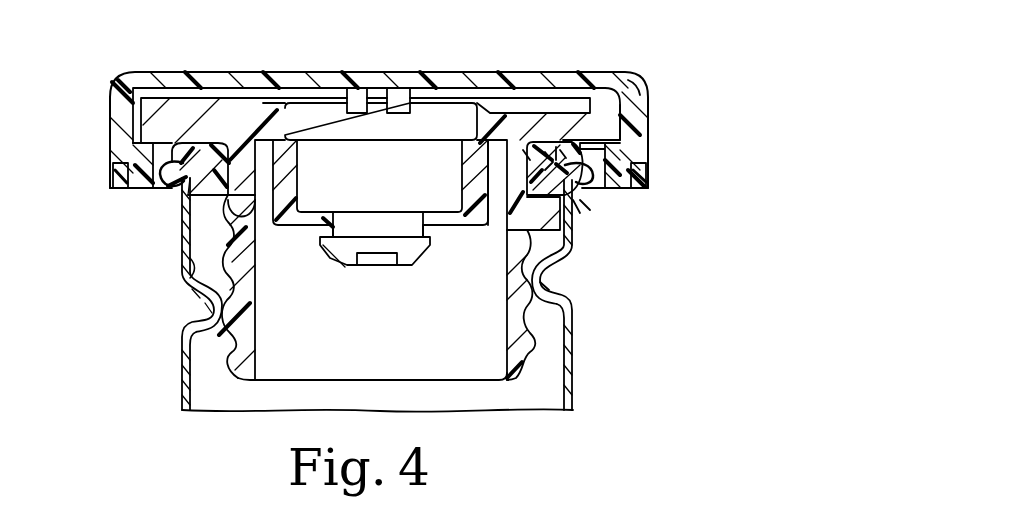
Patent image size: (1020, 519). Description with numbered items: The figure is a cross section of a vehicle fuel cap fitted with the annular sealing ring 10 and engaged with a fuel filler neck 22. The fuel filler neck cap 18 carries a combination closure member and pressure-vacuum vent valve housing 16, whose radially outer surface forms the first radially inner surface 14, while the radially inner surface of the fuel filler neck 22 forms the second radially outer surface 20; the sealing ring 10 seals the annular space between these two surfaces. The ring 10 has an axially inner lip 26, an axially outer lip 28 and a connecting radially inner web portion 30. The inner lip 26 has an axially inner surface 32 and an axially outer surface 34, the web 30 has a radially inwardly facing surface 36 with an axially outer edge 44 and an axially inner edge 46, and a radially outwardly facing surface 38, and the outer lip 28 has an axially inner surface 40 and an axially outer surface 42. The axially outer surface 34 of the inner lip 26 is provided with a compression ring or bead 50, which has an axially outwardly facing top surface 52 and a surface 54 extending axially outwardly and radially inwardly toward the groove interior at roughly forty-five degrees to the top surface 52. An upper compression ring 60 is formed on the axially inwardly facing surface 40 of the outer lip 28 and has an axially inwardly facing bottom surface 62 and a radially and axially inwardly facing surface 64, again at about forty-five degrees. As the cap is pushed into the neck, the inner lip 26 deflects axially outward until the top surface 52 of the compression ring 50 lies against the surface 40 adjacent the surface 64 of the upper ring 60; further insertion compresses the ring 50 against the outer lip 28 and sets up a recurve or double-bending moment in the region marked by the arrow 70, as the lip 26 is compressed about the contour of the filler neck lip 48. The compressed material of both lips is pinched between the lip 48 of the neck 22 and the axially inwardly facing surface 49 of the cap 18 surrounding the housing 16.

The annular sealing ring 10 is at (200, 225).
The first radially inner surface 14 is at (223, 200).
The combination closure member and pressure-vacuum vent valve housing 16 is at (383, 338).
The fuel filler neck cap 18 is at (347, 70).
The second radially outer surface 20 is at (210, 275).
The fuel filler neck 22 is at (180, 343).
The axially inner lip 26 is at (175, 182).
The axially outer lip 28 is at (200, 143).
The radially inner web portion 30 is at (228, 170).
The axially inner surface of inner lip 32 is at (580, 207).
The axially outer surface of inner lip 34 is at (573, 213).
The radially inwardly facing surface of web 36 is at (530, 172).
The radially outwardly facing surface of web 38 is at (533, 158).
The axially inner surface of outer lip 40 is at (552, 157).
The axially outer surface of outer lip 42 is at (557, 147).
The axially outer edge of web inner surface 44 is at (527, 148).
The axially inner edge of web inner surface 46 is at (553, 242).
The filler neck lip 48 is at (168, 163).
The axially inwardly facing surface of cap 49 is at (153, 153).
The compression ring 50 is at (587, 210).
The top surface of compression ring 52 is at (562, 150).
The inclined surface of compression ring 54 is at (525, 185).
The upper compression ring 60 is at (630, 92).
The bottom surface of upper compression ring 62 is at (580, 188).
The radially and axially inwardly facing surface of upper compression ring 64 is at (575, 153).
The arrow indicating double-bending region 70 is at (173, 186).